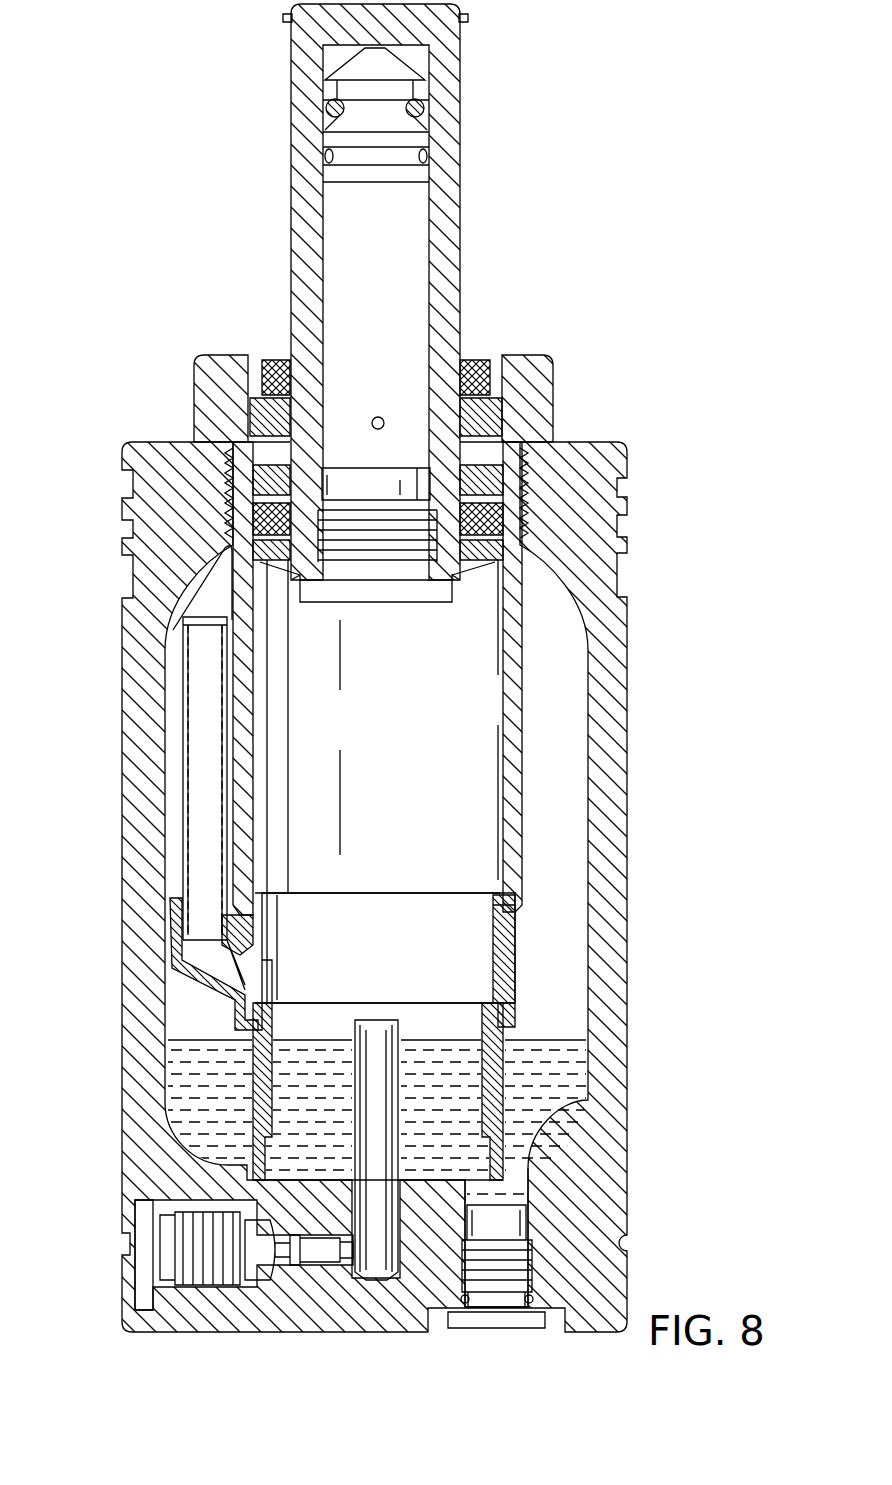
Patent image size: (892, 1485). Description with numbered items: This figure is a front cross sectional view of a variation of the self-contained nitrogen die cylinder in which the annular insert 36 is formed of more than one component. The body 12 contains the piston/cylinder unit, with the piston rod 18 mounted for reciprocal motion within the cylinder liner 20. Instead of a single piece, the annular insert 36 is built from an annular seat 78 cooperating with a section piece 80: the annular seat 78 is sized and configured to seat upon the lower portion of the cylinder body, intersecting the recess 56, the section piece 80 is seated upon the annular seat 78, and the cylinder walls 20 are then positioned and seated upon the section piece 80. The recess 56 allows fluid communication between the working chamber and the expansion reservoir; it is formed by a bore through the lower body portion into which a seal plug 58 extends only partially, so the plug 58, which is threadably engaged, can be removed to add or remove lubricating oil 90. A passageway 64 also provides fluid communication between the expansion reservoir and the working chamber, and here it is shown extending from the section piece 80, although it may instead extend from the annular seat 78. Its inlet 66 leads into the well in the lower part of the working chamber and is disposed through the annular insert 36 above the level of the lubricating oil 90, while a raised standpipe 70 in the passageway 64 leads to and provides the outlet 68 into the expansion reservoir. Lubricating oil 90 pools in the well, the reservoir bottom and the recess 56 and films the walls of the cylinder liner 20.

The body 12 is at (120, 668).
The piston rod 18 is at (462, 187).
The cylinder liner 20 is at (240, 726).
The annular insert 36 is at (515, 953).
The recess 56 is at (528, 1183).
The seal plug 58 is at (510, 1233).
The passageway 64 is at (230, 957).
The inlet 66 is at (262, 968).
The outlet 68 is at (182, 603).
The standpipe 70 is at (182, 808).
The annular seat 78 is at (495, 1080).
The section piece 80 is at (515, 932).
The lubricating oil 90 is at (182, 1060).